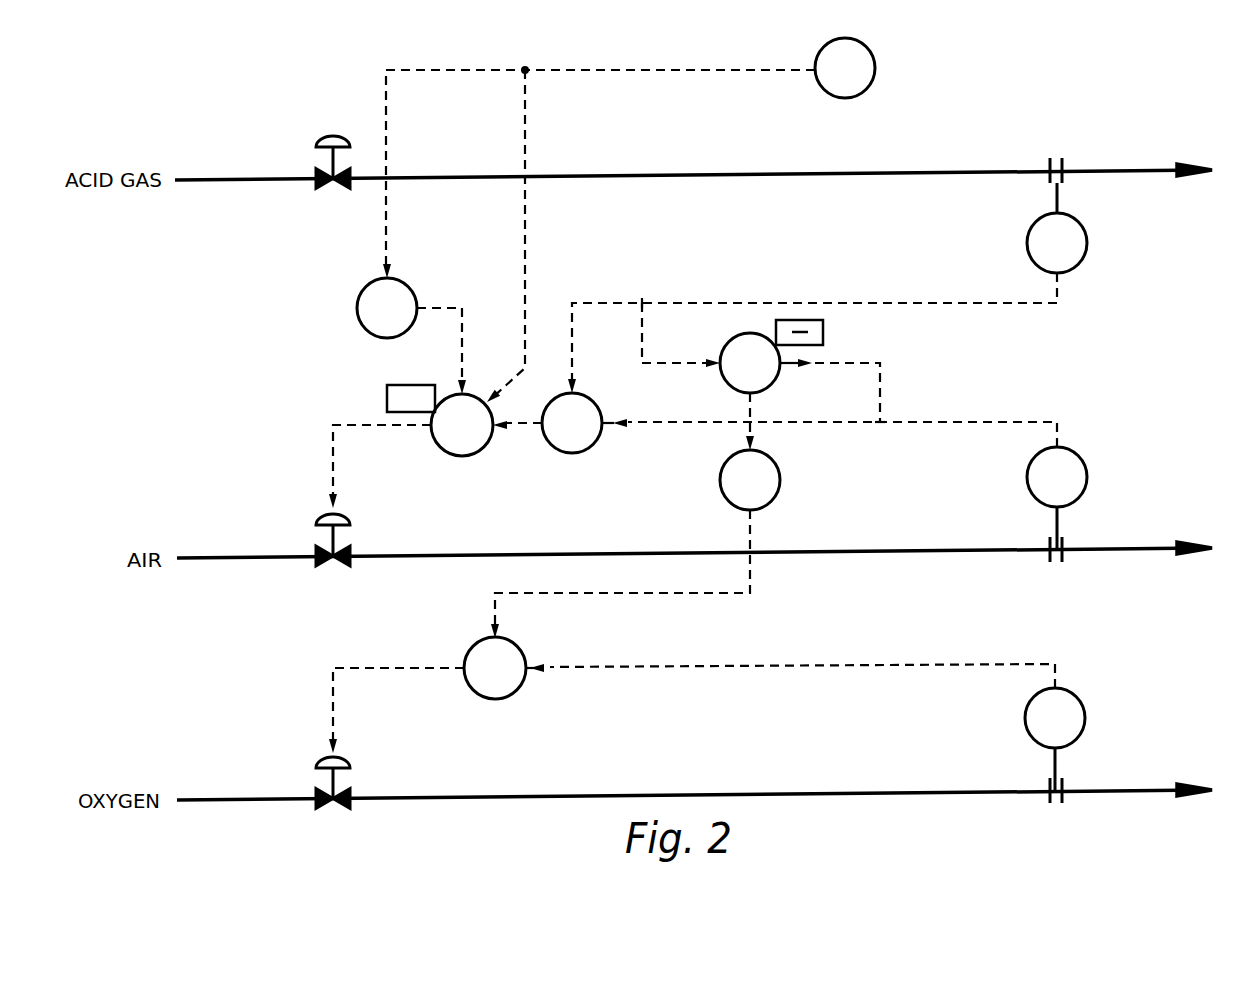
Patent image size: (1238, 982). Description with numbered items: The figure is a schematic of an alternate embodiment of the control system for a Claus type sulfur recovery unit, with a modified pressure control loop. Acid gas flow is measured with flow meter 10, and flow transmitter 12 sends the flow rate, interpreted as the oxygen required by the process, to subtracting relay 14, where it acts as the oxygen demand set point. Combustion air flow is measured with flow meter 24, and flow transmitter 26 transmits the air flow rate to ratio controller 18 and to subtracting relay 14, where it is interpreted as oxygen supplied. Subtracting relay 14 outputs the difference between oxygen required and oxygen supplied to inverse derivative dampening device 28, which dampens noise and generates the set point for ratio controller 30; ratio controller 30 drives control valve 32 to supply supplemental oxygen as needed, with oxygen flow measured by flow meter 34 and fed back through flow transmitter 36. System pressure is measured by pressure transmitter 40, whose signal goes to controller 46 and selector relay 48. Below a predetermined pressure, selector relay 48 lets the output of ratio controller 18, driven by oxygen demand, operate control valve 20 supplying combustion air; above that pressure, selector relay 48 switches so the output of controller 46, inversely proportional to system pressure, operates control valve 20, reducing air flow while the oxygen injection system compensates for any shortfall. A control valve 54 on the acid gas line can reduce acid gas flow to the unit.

The flow meter 10 is at (1065, 158).
The flow transmitter 12 is at (1087, 240).
The subtracting relay 14 is at (728, 378).
The ratio controller 18 is at (577, 453).
The control valve 20 is at (345, 515).
The flow meter 24 is at (1064, 540).
The flow transmitter 26 is at (1085, 465).
The inverse derivative dampening device 28 is at (780, 478).
The ratio controller 30 is at (512, 695).
The control valve 32 is at (348, 762).
The flow meter 34 is at (1064, 785).
The flow transmitter 36 is at (1080, 697).
The pressure transmitter 40 is at (876, 76).
The controller 46 is at (362, 295).
The selector relay 48 is at (465, 455).
The control valve 54 is at (332, 136).